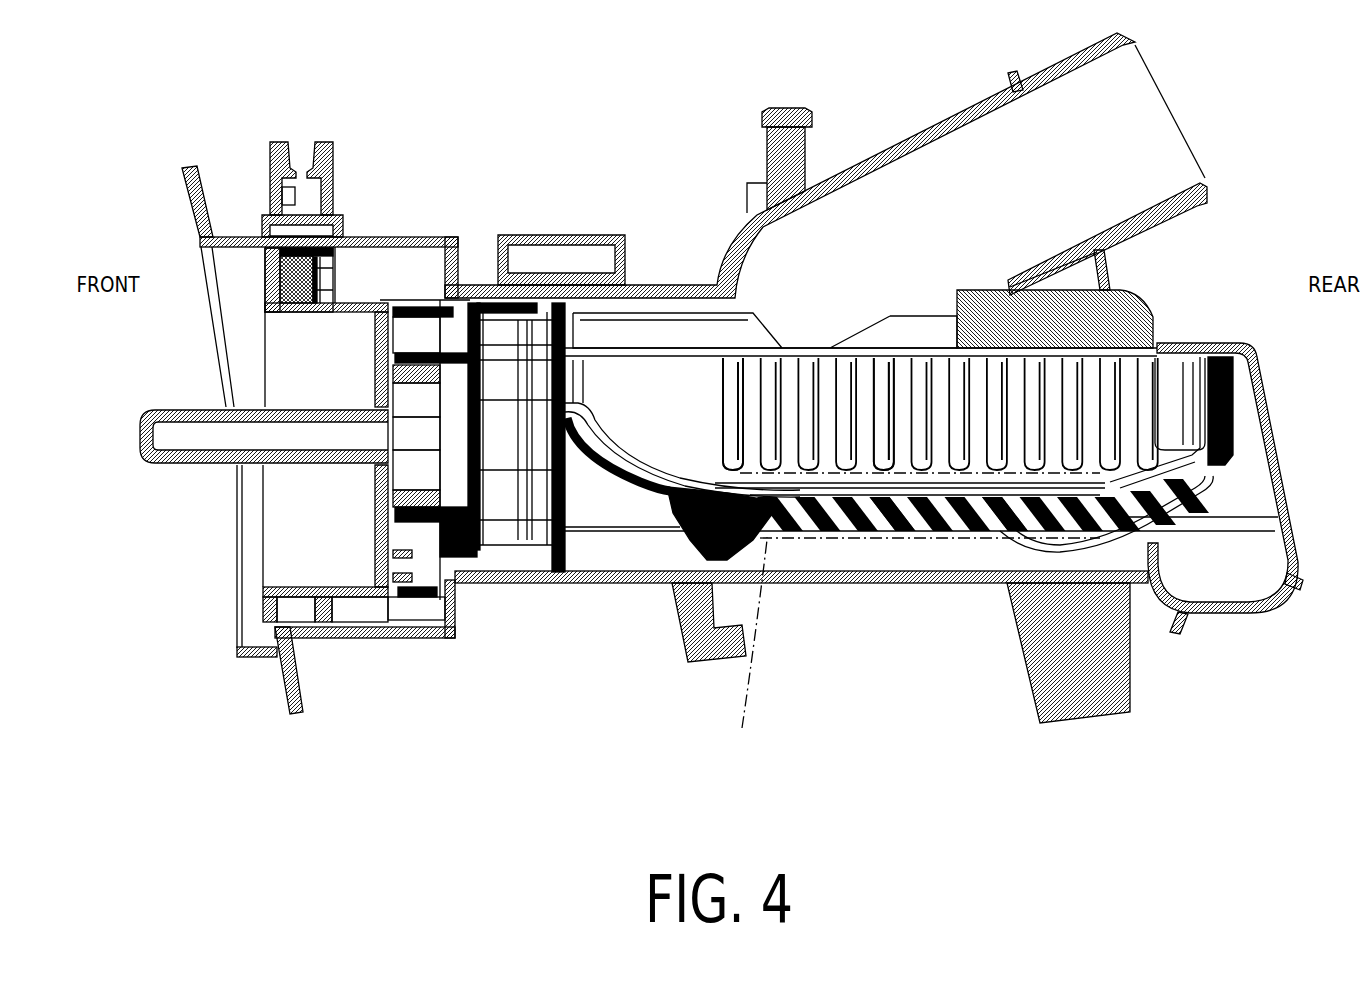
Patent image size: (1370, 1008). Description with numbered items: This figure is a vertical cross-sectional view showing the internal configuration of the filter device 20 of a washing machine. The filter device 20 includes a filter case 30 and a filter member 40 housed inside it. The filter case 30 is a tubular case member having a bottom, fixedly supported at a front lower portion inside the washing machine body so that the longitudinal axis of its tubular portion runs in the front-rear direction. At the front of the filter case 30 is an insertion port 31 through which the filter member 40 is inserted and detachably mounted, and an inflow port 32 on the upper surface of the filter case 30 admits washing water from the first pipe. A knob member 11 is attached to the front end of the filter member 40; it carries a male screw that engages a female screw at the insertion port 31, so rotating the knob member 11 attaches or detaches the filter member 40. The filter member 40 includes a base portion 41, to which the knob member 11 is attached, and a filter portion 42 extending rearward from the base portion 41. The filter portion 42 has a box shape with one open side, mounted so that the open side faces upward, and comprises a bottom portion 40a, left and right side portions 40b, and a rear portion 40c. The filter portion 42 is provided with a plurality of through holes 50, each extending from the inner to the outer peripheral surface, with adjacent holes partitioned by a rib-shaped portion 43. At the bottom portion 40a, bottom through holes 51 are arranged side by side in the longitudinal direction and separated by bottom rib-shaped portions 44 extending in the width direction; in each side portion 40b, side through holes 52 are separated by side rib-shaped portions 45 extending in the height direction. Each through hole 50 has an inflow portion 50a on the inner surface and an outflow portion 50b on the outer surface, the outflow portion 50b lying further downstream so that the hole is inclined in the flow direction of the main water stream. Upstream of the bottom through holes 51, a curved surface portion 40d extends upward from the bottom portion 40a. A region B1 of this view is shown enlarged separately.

The knob member 11 is at (193, 465).
The filter device 20 is at (552, 215).
The filter case 30 is at (678, 283).
The insertion port 31 is at (357, 617).
The inflow port 32 is at (960, 113).
The filter member 40 is at (640, 493).
The bottom portion 40a is at (929, 478).
The side portion 40b is at (1177, 400).
The rear portion 40c is at (1213, 407).
The curved surface portion 40d is at (622, 470).
The base portion 41 is at (480, 283).
The filter portion 42 is at (783, 482).
The rib-shaped portion 43 is at (830, 378).
The bottom rib-shaped portion 44 is at (799, 651).
The side rib-shaped portion 45 is at (791, 288).
The through hole 50 is at (882, 390).
The inflow portion 50a is at (983, 350).
The outflow portion 50b is at (1000, 527).
The bottom through hole 51 is at (896, 651).
The side through hole 52 is at (894, 276).
The region B1 is at (748, 648).